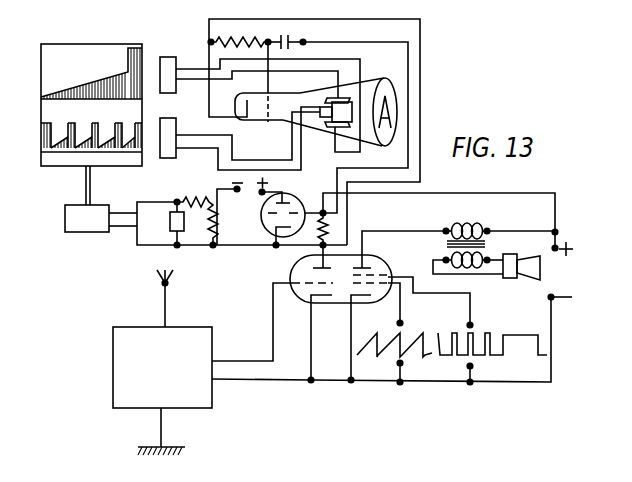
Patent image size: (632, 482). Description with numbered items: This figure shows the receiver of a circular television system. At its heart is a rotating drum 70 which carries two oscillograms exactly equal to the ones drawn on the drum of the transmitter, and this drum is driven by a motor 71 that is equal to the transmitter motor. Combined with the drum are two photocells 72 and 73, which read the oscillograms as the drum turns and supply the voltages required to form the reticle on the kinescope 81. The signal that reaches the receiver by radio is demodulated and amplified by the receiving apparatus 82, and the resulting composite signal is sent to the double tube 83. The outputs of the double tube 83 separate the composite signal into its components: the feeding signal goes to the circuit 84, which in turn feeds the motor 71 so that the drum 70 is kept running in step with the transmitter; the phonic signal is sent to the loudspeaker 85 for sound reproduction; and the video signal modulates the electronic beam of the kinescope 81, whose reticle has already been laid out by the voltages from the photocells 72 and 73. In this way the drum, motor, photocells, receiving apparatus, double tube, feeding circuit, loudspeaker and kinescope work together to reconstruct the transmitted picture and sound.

The rotating drum 70 is at (63, 53).
The motor 71 is at (83, 232).
The photocell 72 is at (172, 62).
The photocell 73 is at (172, 127).
The kinescope 81 is at (284, 100).
The receiving apparatus 82 is at (113, 347).
The double tube 83 is at (335, 302).
The circuit 84 is at (182, 240).
The loudspeaker 85 is at (511, 279).